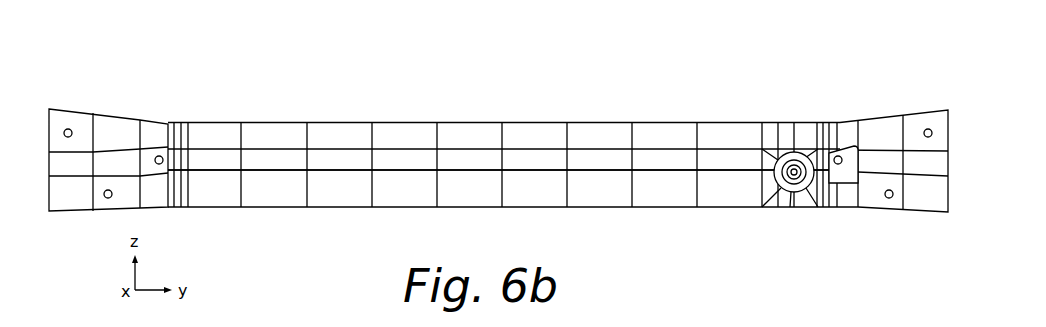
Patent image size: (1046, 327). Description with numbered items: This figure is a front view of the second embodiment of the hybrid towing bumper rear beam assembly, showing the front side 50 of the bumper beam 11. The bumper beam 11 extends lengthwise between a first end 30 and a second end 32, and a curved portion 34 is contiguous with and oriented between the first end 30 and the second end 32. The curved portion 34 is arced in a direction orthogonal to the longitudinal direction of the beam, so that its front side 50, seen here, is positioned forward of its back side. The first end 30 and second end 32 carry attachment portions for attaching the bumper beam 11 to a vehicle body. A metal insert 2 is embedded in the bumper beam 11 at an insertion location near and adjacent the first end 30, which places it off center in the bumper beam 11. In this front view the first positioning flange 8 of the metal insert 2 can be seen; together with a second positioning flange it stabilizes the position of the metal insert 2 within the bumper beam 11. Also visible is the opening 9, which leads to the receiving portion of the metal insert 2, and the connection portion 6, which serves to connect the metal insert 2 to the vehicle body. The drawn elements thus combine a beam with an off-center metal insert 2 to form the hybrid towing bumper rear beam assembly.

The bumper beam 11 is at (513, 64).
The second end 32 is at (81, 125).
The curved portion 34 is at (398, 136).
The front side 50 is at (545, 196).
The first end 30 is at (928, 196).
The first positioning flange 8 is at (775, 155).
The opening 9 is at (800, 156).
The metal insert 2 is at (783, 193).
The connection portion 6 is at (855, 160).